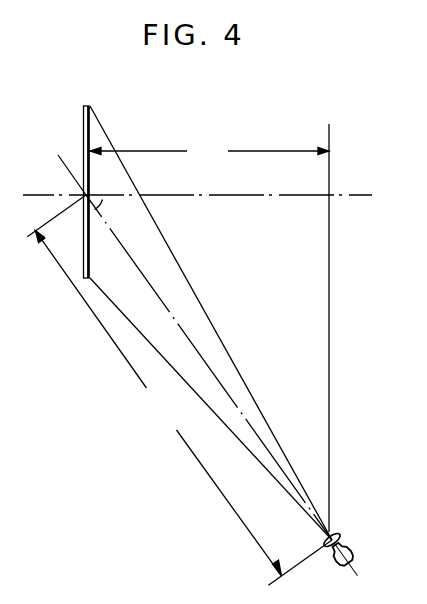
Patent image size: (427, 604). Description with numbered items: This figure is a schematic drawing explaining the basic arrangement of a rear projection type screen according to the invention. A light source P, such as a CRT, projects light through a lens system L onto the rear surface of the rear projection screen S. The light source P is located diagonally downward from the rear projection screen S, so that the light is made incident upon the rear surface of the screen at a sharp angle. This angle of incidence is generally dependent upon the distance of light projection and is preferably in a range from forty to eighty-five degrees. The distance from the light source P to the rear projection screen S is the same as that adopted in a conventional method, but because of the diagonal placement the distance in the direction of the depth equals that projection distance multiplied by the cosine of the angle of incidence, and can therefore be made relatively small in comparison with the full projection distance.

The rear projection screen S is at (83, 124).
The lens system L is at (351, 532).
The light source P is at (360, 559).